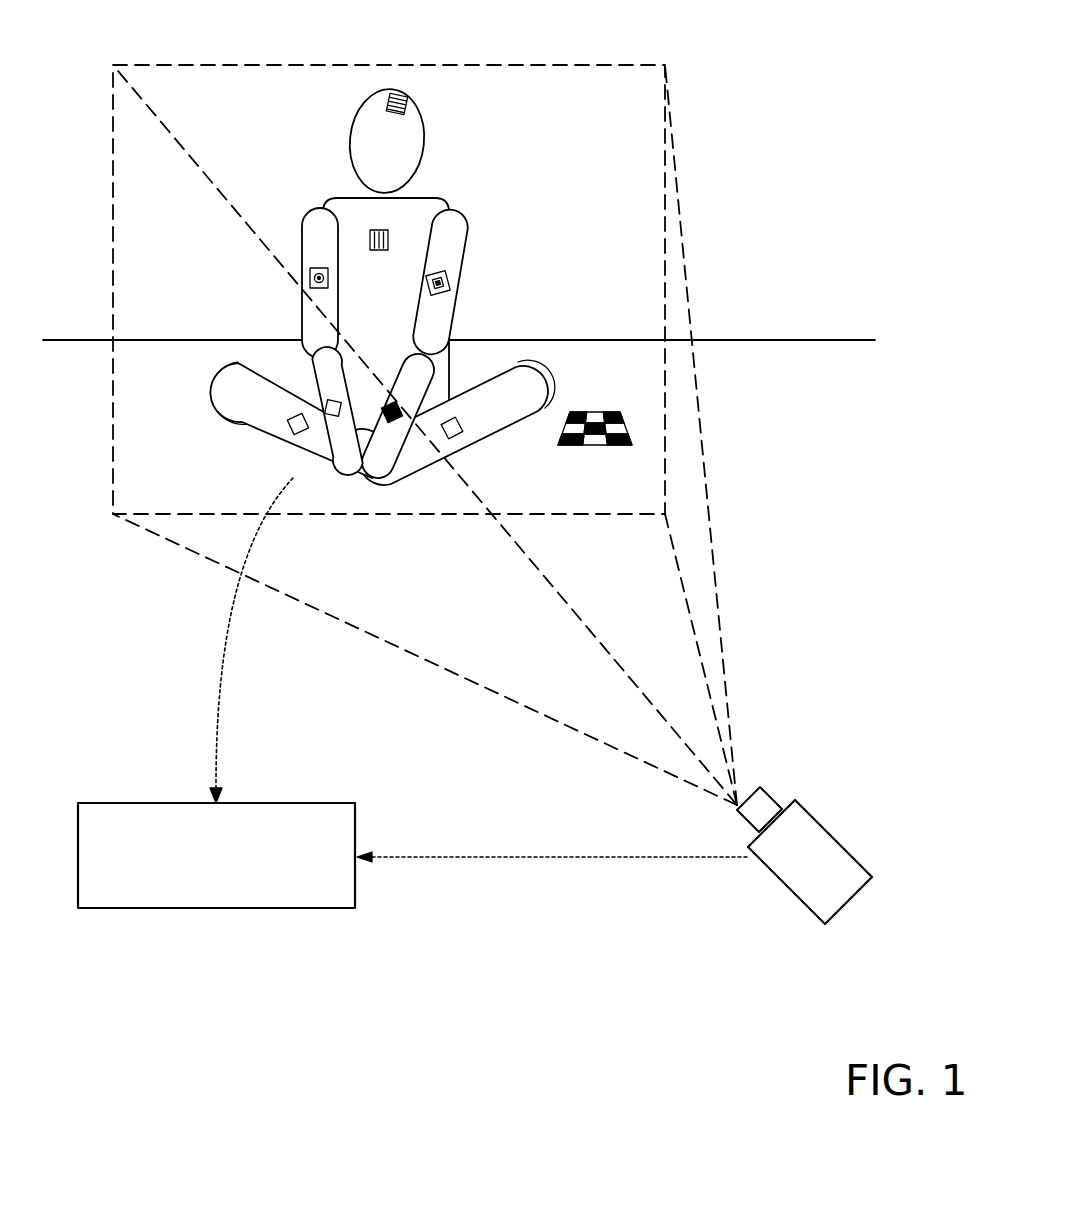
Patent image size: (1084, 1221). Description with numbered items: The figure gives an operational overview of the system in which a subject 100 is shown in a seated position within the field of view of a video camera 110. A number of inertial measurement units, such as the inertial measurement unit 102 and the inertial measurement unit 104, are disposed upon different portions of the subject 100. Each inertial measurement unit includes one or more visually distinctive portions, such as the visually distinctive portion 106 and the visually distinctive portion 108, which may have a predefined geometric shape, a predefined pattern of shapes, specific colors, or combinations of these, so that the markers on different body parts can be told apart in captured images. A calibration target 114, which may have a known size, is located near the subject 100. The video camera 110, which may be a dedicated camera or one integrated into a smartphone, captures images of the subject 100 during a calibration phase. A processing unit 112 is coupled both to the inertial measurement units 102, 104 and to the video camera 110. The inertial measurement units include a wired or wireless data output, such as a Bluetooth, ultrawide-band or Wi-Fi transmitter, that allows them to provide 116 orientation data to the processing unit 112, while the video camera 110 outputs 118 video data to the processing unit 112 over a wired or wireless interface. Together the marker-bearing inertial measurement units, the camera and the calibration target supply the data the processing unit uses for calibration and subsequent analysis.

The subject 100 is at (470, 48).
The inertial measurement unit 102 is at (441, 276).
The inertial measurement unit 104 is at (460, 440).
The visually distinctive portion 106 is at (443, 292).
The visually distinctive portion 108 is at (316, 290).
The video camera 110 is at (803, 803).
The processing unit 112 is at (356, 822).
The calibration target 114 is at (578, 412).
The orientation data output 116 is at (218, 683).
The video data output 118 is at (493, 855).